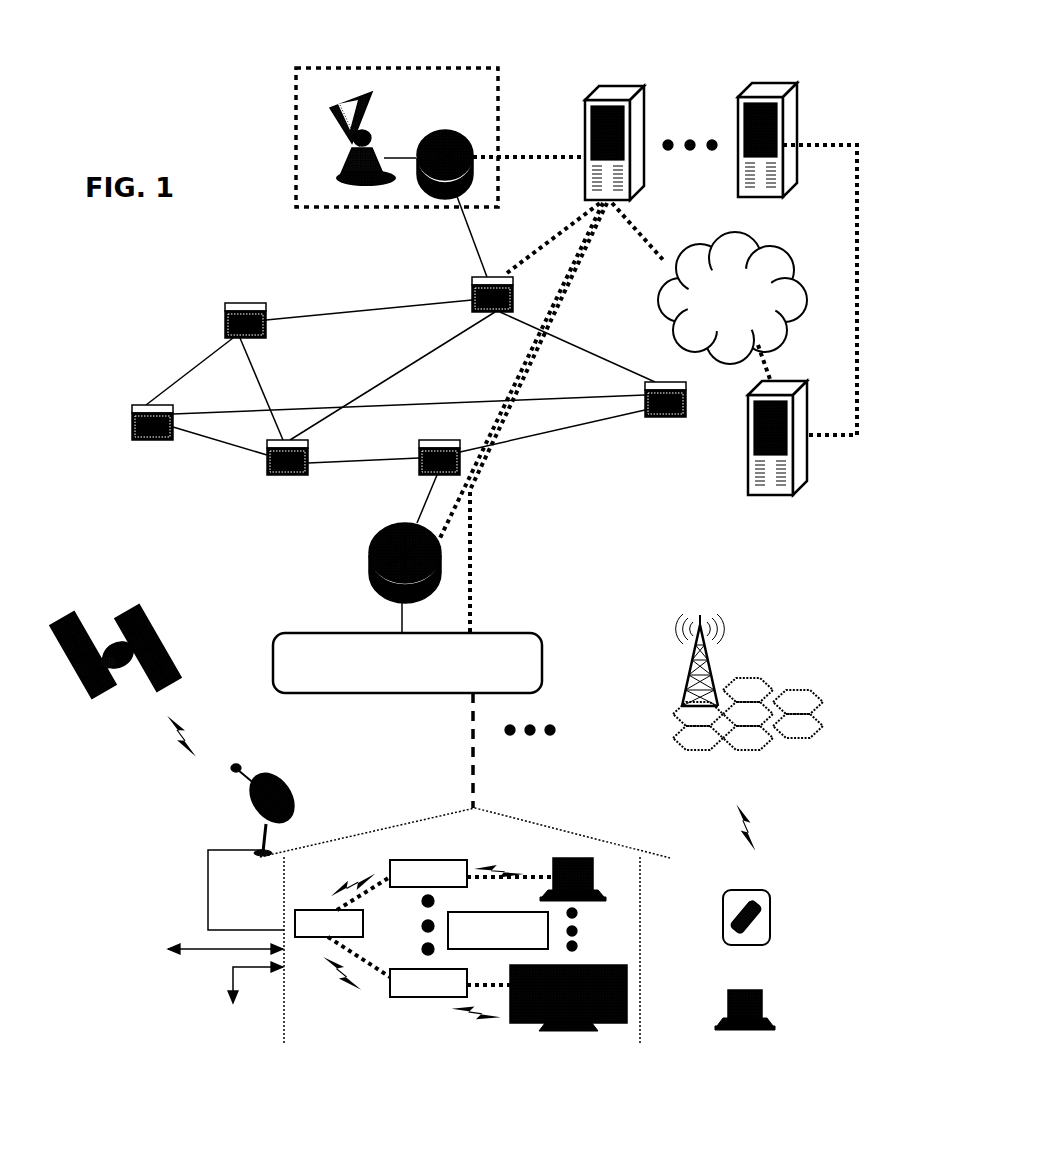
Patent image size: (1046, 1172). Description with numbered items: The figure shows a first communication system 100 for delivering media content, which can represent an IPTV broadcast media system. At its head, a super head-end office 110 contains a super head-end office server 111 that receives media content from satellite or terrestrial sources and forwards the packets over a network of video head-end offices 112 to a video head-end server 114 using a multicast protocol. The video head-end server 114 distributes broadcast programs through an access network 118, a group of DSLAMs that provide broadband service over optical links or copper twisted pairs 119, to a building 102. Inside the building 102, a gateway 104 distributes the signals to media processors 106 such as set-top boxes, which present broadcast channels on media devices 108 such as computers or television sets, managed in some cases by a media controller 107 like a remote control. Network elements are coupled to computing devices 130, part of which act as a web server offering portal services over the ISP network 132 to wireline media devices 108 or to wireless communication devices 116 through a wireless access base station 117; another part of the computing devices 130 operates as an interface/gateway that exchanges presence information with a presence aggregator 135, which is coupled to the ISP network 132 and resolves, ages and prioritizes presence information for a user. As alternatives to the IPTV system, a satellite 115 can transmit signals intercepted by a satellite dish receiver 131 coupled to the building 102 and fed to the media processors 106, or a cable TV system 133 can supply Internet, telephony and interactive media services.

The communication system 100 is at (126, 148).
The building 102 is at (465, 937).
The gateway 104 is at (342, 932).
The media processor 106 is at (472, 942).
The media controller 107 is at (512, 929).
The media device 108 is at (578, 858).
The super head-end office 110 is at (293, 150).
The super head-end office server 111 is at (422, 136).
The network of video head-end offices 112 is at (132, 423).
The video head-end server 114 is at (367, 562).
The satellite 115 is at (78, 660).
The wireless communication device 116 is at (770, 903).
The wireless access base station 117 is at (748, 683).
The access network 118 is at (542, 660).
The optical links or copper twisted pairs 119 is at (470, 785).
The computing devices / interface gateway 130 is at (770, 90).
The satellite dish receiver 131 is at (192, 847).
The ISP network 132 is at (422, 596).
The cable TV system 133 is at (232, 1012).
The presence aggregator 135 is at (766, 470).